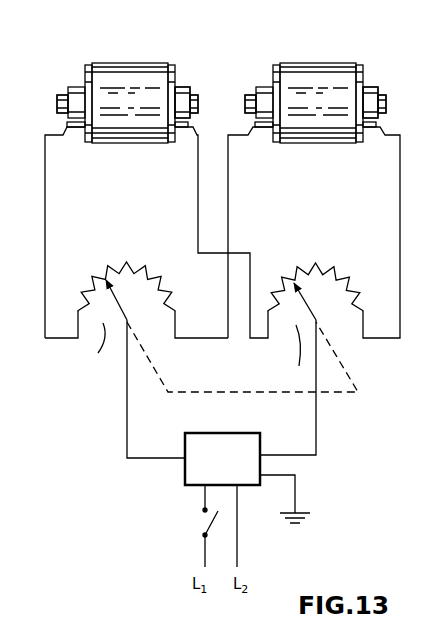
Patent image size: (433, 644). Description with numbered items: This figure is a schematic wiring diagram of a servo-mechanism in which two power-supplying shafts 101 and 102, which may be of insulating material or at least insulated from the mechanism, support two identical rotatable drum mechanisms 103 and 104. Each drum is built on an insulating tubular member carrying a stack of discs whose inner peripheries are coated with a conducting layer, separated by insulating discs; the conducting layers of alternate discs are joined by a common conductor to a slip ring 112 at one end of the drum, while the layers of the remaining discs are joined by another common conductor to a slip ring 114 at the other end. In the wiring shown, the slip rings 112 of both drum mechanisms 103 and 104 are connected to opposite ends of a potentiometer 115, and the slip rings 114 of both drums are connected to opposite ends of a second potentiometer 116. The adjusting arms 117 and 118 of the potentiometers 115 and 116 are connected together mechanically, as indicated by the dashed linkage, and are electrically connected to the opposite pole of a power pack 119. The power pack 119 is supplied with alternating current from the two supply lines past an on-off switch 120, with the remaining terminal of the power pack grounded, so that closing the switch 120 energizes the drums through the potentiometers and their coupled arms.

The power-supplying shaft 101 is at (193, 93).
The power-supplying shaft 102 is at (382, 93).
The rotatable drum mechanism 103 is at (101, 56).
The rotatable drum mechanism 104 is at (306, 56).
The slip ring 112 is at (72, 84).
The slip ring 114 is at (178, 83).
The potentiometer 115 is at (118, 325).
The potentiometer 116 is at (316, 325).
The adjusting arm 117 is at (125, 309).
The adjusting arm 118 is at (314, 309).
The power pack 119 is at (246, 463).
The on-off switch 120 is at (201, 525).